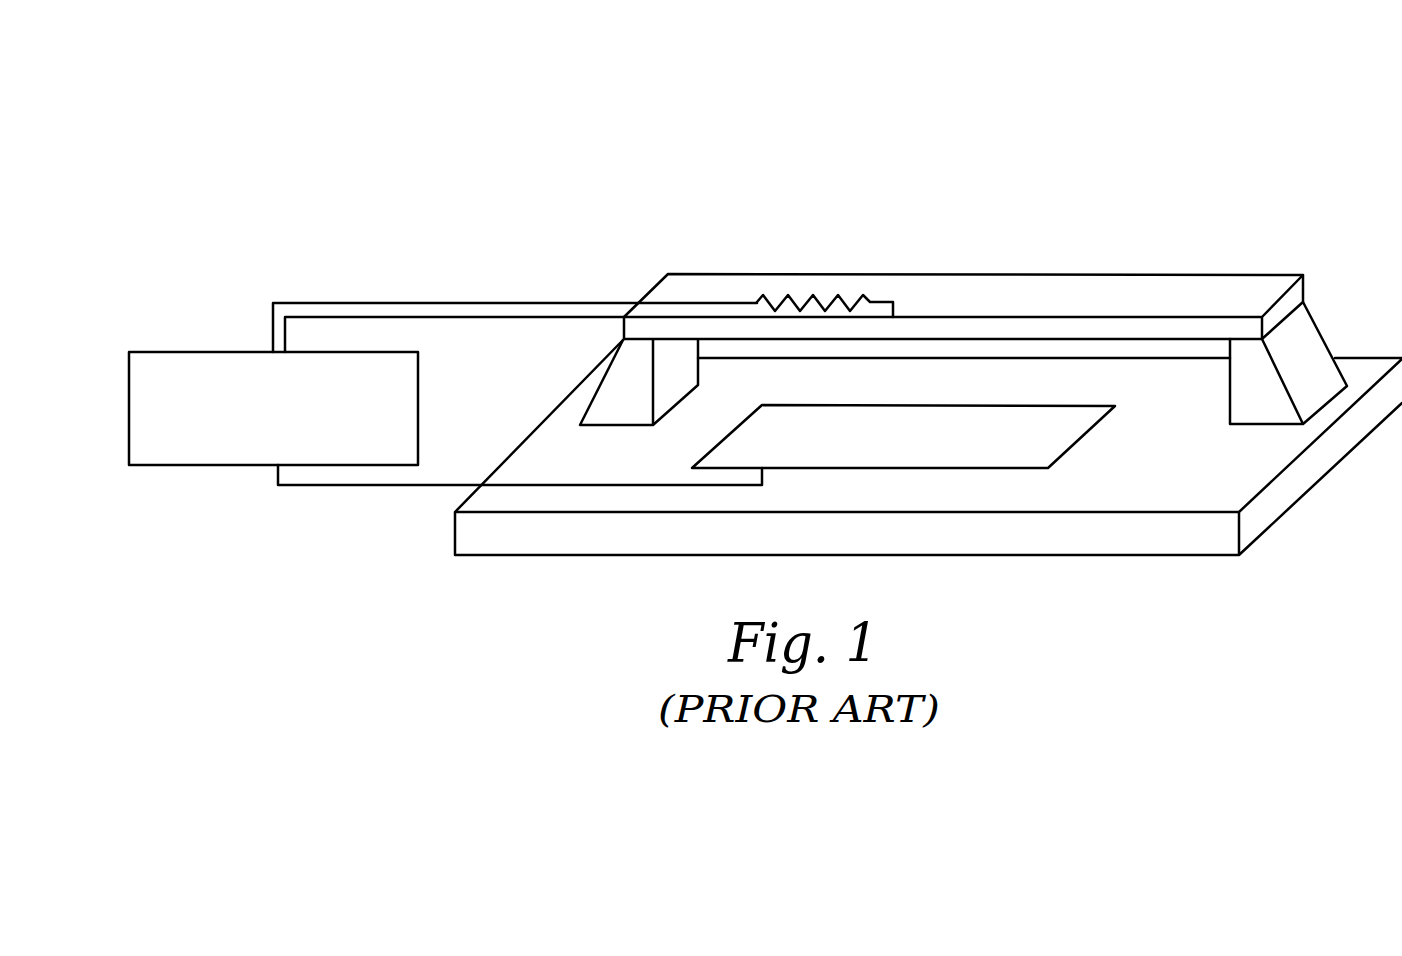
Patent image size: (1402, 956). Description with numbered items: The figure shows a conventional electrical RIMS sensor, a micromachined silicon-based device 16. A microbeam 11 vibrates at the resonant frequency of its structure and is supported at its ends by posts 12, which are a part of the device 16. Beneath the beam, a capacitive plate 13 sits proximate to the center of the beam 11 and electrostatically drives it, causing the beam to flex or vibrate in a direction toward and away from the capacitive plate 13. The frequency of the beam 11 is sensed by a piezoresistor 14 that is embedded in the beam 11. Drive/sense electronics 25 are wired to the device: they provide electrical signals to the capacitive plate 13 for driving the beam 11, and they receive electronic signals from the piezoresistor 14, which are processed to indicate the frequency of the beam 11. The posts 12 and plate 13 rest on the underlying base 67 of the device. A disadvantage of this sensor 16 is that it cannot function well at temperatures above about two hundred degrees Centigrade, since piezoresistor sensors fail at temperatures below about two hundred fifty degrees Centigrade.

The microbeam 11 is at (1213, 288).
The posts 12 is at (680, 384).
The capacitive plate 13 is at (1077, 429).
The piezoresistor 14 is at (818, 300).
The micromachined silicon-based device 16 is at (1300, 129).
The drive/sense electronics 25 is at (170, 450).
The substrate 67 is at (1282, 495).